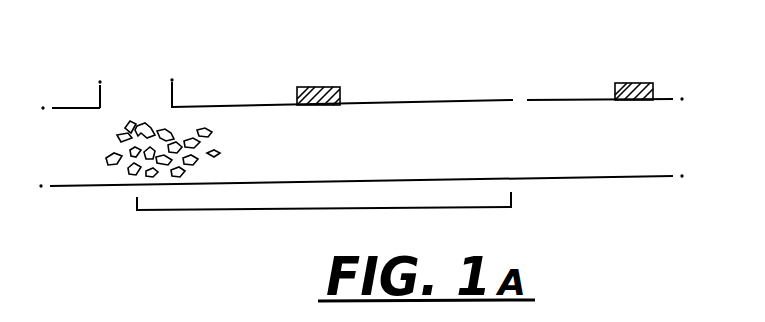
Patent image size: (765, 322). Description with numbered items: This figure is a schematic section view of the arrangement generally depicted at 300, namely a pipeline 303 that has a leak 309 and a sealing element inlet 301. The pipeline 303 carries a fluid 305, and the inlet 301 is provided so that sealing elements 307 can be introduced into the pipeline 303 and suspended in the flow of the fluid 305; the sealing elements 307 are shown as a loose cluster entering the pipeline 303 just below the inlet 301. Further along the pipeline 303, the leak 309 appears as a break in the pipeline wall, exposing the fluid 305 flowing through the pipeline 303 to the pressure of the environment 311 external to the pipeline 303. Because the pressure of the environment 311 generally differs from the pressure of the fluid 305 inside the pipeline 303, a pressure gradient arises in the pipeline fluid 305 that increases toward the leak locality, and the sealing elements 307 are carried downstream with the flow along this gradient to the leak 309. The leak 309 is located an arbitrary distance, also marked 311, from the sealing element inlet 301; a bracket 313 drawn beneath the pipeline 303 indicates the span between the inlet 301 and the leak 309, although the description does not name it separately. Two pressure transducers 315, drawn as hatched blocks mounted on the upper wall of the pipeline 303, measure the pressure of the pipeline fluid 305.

The pipeline with leak and sealing element inlet 300 is at (433, 69).
The sealing element inlet 301 is at (145, 95).
The pipeline 303 is at (583, 178).
The fluid 305 is at (444, 146).
The sealing elements 307 is at (107, 162).
The leak 309 is at (521, 100).
The environment external to the pipeline 311 is at (342, 87).
The bracketed region 313 is at (322, 210).
The pressure transducers 315 is at (326, 87).